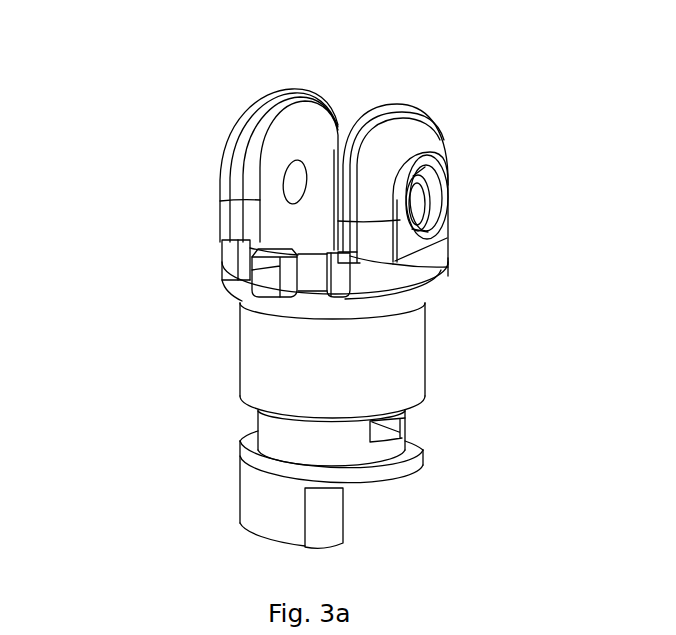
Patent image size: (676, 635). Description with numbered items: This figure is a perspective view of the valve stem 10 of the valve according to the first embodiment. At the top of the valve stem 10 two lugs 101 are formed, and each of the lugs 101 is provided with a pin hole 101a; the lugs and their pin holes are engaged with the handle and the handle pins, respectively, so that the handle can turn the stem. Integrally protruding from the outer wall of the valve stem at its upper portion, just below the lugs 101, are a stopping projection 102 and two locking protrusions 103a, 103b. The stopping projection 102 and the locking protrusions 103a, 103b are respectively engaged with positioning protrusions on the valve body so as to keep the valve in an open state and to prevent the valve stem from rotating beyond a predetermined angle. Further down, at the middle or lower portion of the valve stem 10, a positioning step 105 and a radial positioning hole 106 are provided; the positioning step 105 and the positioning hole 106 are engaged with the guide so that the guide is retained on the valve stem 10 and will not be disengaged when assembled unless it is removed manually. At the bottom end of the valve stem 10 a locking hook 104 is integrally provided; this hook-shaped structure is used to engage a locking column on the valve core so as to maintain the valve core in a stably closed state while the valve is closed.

The valve stem 10 is at (145, 390).
The lugs 101 is at (245, 138).
The pin holes 101a is at (300, 178).
The stopping projection 102 is at (255, 284).
The locking protrusion 103a is at (242, 252).
The locking protrusion 103b is at (343, 283).
The locking hook 104 is at (317, 542).
The positioning step 105 is at (262, 462).
The radial positioning hole 106 is at (402, 423).